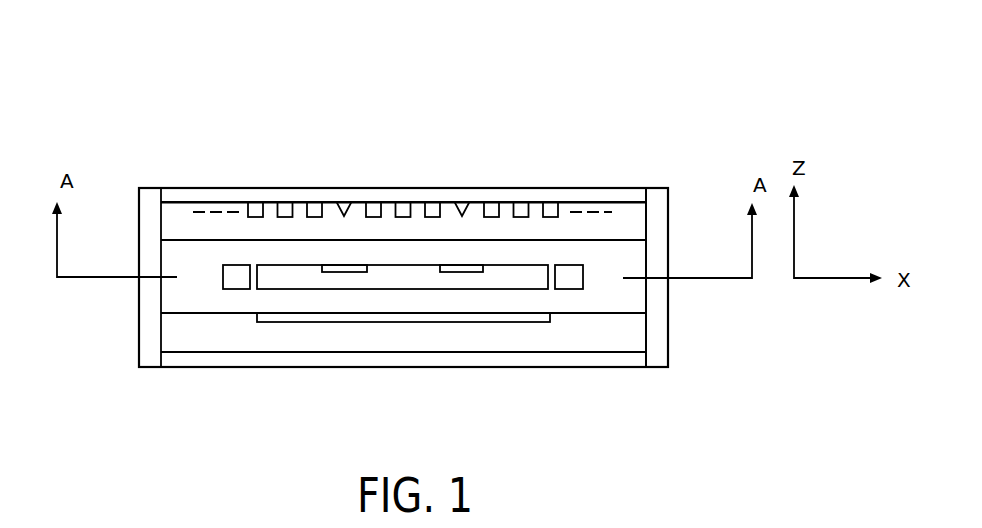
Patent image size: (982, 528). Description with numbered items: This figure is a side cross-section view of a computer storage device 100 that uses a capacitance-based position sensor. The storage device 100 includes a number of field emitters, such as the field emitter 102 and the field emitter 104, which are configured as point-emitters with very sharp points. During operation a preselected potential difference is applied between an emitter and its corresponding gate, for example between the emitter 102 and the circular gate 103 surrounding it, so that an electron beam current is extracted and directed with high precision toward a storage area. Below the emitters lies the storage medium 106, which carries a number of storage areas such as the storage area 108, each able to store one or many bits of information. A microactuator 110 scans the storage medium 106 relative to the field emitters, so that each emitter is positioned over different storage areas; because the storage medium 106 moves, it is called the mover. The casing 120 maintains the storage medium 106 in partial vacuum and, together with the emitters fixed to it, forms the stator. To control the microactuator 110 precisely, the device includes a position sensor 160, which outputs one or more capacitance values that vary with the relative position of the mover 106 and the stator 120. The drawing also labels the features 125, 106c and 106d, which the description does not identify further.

The storage device 100 is at (168, 88).
The field emitter 102 is at (347, 201).
The circular gate 103 is at (317, 203).
The field emitter 104 is at (462, 204).
The tab 125 is at (403, 203).
The storage area 108 is at (337, 265).
The storage medium 106 is at (270, 289).
The left pad 106c is at (232, 289).
The right pad 106d is at (565, 289).
The microactuator 110 is at (513, 322).
The casing 120 is at (663, 327).
The capacitance-based position sensor 160 is at (230, 306).